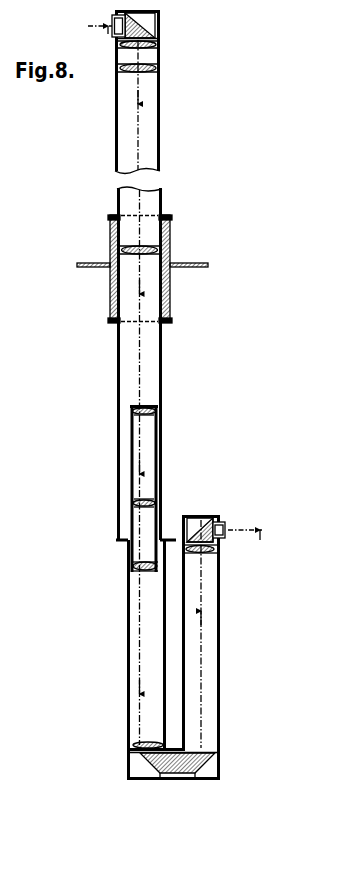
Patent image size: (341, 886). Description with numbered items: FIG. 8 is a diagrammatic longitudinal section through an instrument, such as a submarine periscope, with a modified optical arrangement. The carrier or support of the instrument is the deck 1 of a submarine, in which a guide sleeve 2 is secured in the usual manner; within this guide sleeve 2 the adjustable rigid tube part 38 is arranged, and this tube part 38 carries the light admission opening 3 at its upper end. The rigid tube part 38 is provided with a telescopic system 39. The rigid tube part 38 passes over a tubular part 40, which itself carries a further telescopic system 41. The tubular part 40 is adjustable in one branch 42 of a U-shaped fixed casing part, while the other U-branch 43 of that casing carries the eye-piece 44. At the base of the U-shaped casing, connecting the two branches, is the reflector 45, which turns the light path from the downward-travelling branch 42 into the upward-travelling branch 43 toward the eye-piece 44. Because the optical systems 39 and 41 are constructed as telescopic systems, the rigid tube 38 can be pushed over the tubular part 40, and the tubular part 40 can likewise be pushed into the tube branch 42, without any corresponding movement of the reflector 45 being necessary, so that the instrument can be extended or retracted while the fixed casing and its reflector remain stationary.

The deck 1 is at (193, 263).
The guide sleeve 2 is at (110, 232).
The light admission opening 3 is at (112, 17).
The adjustable rigid tube part 38 is at (115, 140).
The telescopic system 39 is at (143, 72).
The tubular part 40 is at (128, 452).
The telescopic system 41 is at (148, 562).
The branch of U-shaped fixed casing part 42 is at (127, 635).
The U-branch 43 is at (222, 635).
The eye-piece 44 is at (224, 524).
The reflector 45 is at (207, 760).